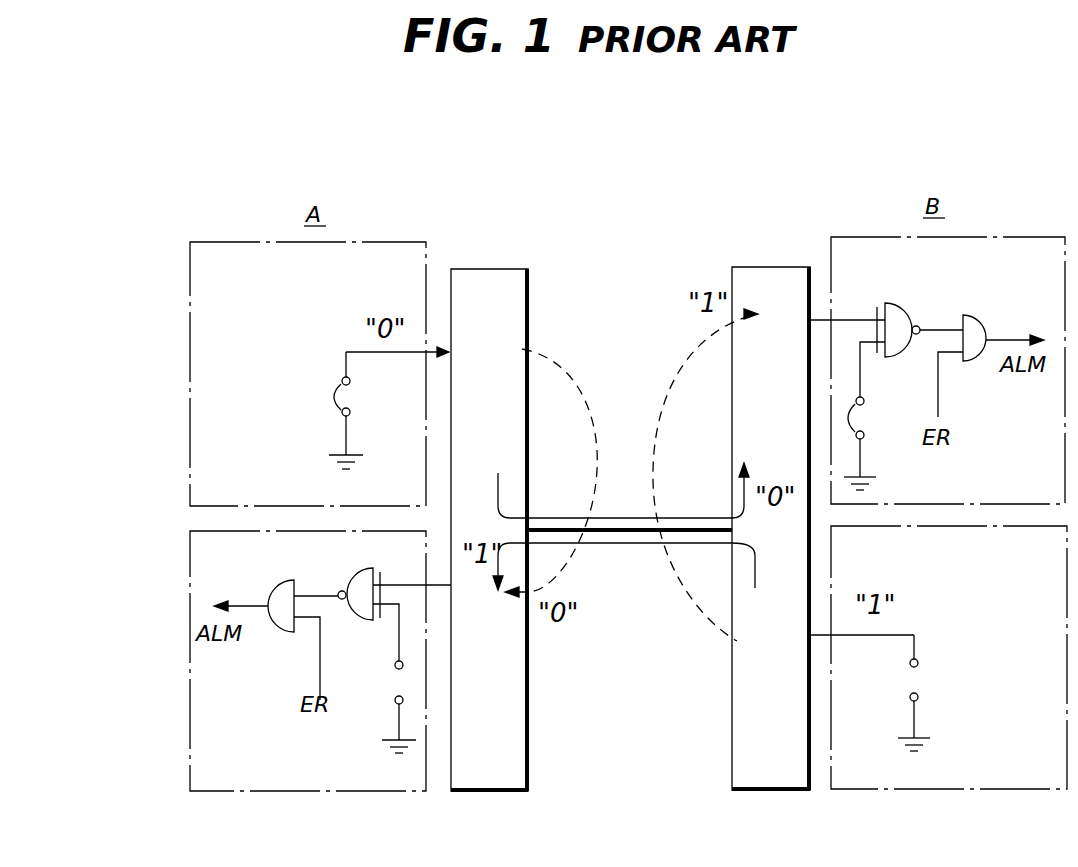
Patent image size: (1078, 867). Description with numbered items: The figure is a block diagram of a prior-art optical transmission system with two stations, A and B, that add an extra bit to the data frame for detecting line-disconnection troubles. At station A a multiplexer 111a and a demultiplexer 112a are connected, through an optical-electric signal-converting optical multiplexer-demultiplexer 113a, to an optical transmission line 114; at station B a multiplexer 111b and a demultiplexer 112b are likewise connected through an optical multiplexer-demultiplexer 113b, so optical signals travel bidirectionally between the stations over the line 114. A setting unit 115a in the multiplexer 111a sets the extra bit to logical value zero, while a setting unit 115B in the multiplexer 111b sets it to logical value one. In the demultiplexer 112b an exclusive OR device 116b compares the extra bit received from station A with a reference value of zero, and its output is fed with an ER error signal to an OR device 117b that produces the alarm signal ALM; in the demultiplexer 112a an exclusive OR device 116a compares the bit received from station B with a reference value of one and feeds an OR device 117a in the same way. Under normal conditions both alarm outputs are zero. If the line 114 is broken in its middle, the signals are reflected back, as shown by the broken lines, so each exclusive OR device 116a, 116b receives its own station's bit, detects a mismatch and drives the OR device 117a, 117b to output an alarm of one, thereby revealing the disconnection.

The multiplexer 111a is at (197, 242).
The multiplexer 111b is at (880, 792).
The demultiplexer 112a is at (306, 794).
The demultiplexer 112b is at (823, 224).
The optical multiplexer-demultiplexer 113a is at (495, 268).
The optical multiplexer-demultiplexer 113b is at (768, 266).
The optical transmission line 114 is at (621, 545).
The setting unit 115a is at (340, 368).
The setting unit 115B is at (942, 664).
The exclusive OR device 116a is at (350, 567).
The exclusive OR device 116b is at (910, 295).
The OR device 117a is at (282, 636).
The OR device 117b is at (990, 300).